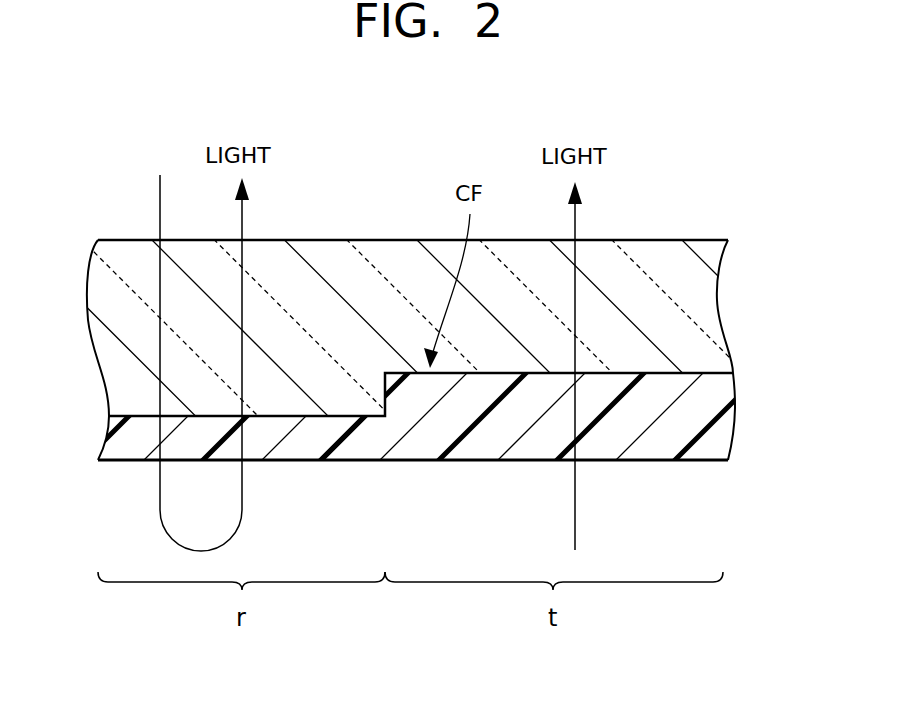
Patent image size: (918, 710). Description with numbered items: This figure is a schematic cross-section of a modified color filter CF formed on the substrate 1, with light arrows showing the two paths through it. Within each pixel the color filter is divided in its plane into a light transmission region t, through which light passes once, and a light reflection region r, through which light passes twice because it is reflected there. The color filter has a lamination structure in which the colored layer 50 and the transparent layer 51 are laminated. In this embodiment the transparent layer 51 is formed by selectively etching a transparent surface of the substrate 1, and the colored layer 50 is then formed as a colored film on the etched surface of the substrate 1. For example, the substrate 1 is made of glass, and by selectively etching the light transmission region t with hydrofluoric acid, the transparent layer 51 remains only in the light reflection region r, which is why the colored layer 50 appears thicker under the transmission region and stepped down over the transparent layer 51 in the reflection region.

The substrate 1 is at (707, 315).
The colored layer 50 is at (692, 393).
The transparent layer 51 is at (128, 407).